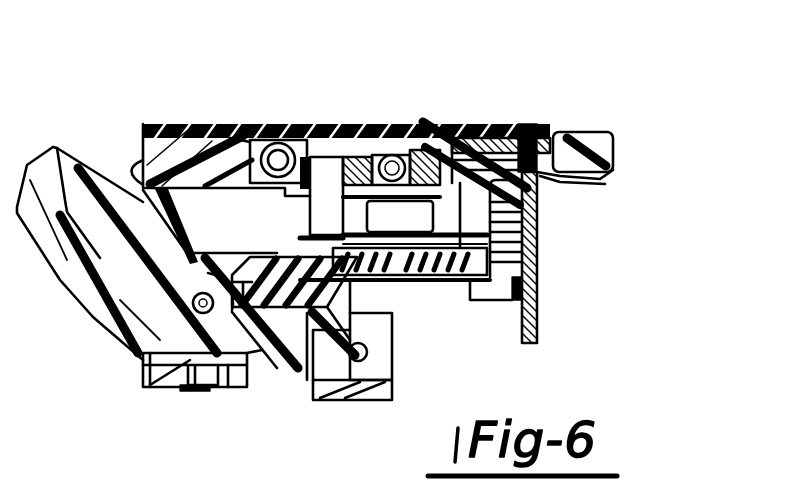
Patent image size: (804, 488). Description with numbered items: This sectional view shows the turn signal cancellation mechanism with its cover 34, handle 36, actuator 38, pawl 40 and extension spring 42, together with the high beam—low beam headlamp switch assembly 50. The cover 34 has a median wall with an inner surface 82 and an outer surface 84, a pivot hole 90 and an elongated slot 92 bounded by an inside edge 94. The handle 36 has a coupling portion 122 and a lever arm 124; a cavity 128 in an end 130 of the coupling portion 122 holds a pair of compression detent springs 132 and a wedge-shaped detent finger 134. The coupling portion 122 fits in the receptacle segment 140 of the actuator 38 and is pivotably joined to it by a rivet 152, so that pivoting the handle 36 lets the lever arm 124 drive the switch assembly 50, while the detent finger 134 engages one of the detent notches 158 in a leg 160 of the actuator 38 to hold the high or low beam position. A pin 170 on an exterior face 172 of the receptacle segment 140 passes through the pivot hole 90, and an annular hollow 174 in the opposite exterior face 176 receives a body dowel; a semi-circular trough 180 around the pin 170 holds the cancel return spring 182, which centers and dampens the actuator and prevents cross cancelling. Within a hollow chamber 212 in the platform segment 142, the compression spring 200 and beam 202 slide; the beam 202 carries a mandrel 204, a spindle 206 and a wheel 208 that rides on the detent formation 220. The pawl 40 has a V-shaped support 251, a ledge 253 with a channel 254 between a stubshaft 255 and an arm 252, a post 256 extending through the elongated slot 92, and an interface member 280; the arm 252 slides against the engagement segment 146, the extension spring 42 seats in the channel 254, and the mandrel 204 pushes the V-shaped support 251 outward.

The cover 34 is at (522, 128).
The handle 36 is at (55, 175).
The actuator 38 is at (177, 116).
The pawl 40 is at (642, 165).
The extension spring 42 is at (452, 124).
The high beam—low beam headlamp switch assembly 50 is at (365, 387).
The inner surface 82 is at (350, 124).
The outer surface 84 is at (298, 124).
The pivot hole 90 is at (222, 124).
The elongated slot 92 is at (472, 130).
The inside edge 94 is at (522, 128).
The coupling portion 122 is at (163, 293).
The lever arm 124 is at (368, 352).
The cavity 128 is at (250, 365).
The end 130 is at (320, 400).
The compression detent springs 132 is at (207, 240).
The detent finger 134 is at (246, 253).
The receptacle segment 140 is at (230, 397).
The platform segment 142 is at (533, 253).
The engagement segment 146 is at (537, 136).
The rivet 152 is at (143, 347).
The detent notches 158 is at (350, 298).
The leg 160 is at (365, 320).
The pin 170 is at (200, 124).
The exterior face 172 is at (143, 158).
The annular hollow 174 is at (200, 384).
The opposite exterior face 176 is at (160, 392).
The trough 180 is at (258, 124).
The cancel return spring 182 is at (318, 127).
The compression spring 200 is at (533, 236).
The beam 202 is at (478, 290).
The mandrel 204 is at (533, 218).
The spindle 206 is at (540, 300).
The wheel 208 is at (537, 287).
The hollow chamber 212 is at (360, 237).
The detent formation 220 is at (535, 270).
The V-shaped support 251 is at (533, 208).
The arm 252 is at (580, 177).
The ledge 253 is at (440, 127).
The channel 254 is at (380, 133).
The stubshaft 255 is at (372, 130).
The post 256 is at (490, 136).
The interface member 280 is at (592, 150).